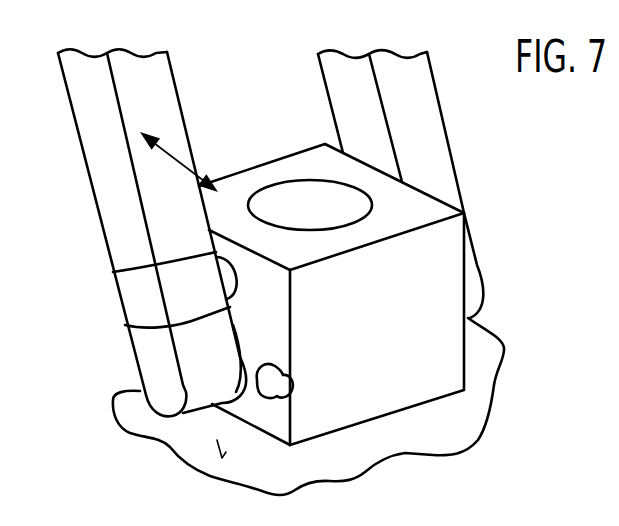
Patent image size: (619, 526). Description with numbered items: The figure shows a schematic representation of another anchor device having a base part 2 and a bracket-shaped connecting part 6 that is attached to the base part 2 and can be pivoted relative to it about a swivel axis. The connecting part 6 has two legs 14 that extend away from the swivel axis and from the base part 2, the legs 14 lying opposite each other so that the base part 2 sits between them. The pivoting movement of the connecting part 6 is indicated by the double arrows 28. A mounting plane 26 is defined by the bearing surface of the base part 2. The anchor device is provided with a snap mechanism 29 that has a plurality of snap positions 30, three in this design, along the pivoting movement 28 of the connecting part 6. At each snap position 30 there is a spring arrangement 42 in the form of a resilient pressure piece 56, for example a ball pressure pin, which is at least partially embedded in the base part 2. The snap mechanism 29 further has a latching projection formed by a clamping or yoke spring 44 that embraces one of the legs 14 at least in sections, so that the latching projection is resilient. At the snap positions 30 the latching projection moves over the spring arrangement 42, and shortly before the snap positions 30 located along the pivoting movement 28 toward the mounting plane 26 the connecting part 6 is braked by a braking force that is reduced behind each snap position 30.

The base part 2 is at (331, 296).
The connecting part 6 is at (100, 197).
The legs 14 is at (272, 232).
The mounting plane 26 is at (218, 452).
The double arrows 28 is at (185, 155).
The snap mechanism 29 is at (358, 322).
The snap positions 30 is at (221, 378).
The spring arrangement 42 is at (307, 391).
The clamping or yoke spring 44 is at (133, 300).
The resilient pressure piece 56 is at (306, 398).